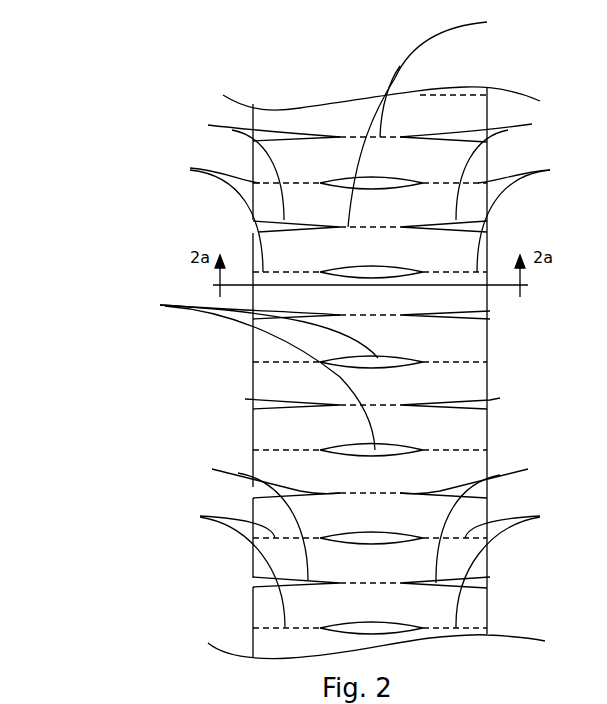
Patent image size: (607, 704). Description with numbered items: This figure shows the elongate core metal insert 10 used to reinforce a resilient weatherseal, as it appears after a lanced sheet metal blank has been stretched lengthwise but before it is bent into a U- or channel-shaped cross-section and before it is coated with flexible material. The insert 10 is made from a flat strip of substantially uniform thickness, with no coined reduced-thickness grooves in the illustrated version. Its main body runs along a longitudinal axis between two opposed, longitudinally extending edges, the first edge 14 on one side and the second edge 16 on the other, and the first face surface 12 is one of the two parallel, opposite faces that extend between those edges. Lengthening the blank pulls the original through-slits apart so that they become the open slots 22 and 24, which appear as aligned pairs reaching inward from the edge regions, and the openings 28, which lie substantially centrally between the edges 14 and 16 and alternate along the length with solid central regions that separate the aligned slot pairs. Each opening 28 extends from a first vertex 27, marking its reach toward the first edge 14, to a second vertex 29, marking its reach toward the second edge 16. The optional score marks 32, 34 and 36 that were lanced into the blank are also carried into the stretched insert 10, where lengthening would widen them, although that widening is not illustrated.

The core metal insert 10 is at (200, 69).
The first face surface 12 is at (376, 669).
The first edge 14 is at (253, 387).
The second edge 16 is at (489, 344).
The open slot 22 is at (257, 345).
The open slot 24 is at (480, 348).
The first vertex 27 is at (322, 450).
The opening 28 is at (252, 370).
The second vertex 29 is at (422, 450).
The score mark 32 is at (217, 391).
The score mark 34 is at (519, 394).
The score mark 36 is at (432, 118).